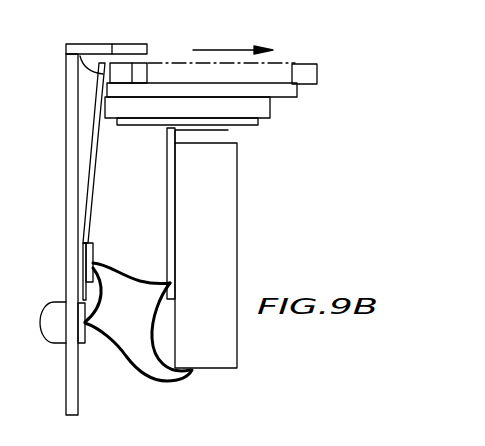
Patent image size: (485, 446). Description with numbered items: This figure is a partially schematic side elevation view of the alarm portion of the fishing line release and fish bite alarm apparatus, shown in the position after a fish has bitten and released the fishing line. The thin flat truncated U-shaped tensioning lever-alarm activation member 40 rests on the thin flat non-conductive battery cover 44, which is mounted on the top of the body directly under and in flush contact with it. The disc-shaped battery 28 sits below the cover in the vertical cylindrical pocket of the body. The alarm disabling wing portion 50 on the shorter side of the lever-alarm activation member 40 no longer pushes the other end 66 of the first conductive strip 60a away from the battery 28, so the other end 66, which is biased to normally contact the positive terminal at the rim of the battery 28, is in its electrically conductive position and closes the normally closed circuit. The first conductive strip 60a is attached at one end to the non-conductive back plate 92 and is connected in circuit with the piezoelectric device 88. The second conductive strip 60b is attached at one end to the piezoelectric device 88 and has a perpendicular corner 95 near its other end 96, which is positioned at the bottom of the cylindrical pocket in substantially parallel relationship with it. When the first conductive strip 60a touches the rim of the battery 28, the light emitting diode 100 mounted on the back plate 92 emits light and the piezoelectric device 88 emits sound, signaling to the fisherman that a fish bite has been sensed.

The tensioning lever-alarm activation member 40 is at (295, 63).
The battery cover 44 is at (297, 91).
The battery 28 is at (272, 101).
The alarm disabling wing portion 50 is at (123, 72).
The other end of the first conductive strip 66 is at (65, 48).
The first conductive strip 60a is at (95, 112).
The second conductive strip 60b is at (168, 134).
The back plate 92 is at (65, 182).
The perpendicular corner 95 is at (168, 128).
The other end of the second conductive strip 96 is at (228, 131).
The piezoelectric device 88 is at (228, 214).
The light emitting diode 100 is at (42, 317).